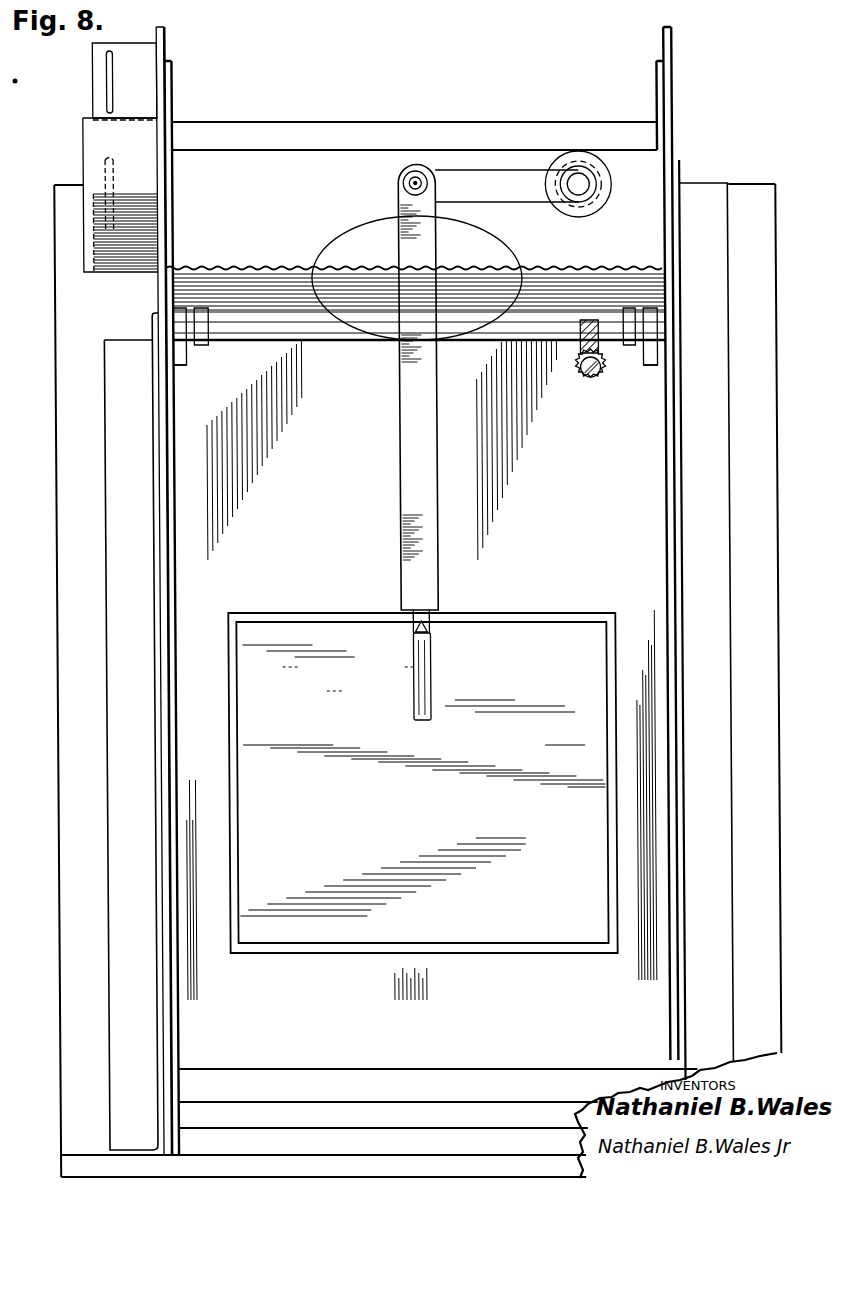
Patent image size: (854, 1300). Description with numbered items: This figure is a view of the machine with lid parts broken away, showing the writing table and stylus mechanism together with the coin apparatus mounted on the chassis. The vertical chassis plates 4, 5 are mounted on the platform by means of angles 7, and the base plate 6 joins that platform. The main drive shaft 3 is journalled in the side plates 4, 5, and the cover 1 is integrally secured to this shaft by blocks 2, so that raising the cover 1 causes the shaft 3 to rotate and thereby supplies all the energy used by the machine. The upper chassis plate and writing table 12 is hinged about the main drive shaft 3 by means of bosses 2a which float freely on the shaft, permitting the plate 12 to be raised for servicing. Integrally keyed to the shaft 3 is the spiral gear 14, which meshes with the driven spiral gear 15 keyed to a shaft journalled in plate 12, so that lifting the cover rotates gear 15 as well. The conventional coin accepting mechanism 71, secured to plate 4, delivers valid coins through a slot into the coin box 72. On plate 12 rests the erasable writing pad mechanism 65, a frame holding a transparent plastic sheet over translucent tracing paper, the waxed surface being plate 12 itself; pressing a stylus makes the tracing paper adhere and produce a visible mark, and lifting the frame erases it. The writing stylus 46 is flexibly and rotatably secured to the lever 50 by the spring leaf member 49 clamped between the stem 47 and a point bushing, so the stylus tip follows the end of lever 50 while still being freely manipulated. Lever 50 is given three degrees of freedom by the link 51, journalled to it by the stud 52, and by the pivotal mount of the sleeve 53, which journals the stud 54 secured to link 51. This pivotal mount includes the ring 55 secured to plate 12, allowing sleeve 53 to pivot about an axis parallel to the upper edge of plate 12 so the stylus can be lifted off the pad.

The cover 1 is at (245, 268).
The blocks 2 is at (206, 315).
The bosses 2a is at (190, 366).
The main drive shaft 3 is at (245, 335).
The vertical chassis plate 4 is at (166, 237).
The vertical chassis plate 5 is at (683, 256).
The base plate 6 is at (58, 382).
The angles 7 is at (141, 341).
The upper chassis plate and writing table 12 is at (660, 556).
The spiral gear 14 is at (590, 320).
The driven spiral gear 15 is at (586, 386).
The writing stylus 46 is at (430, 677).
The stem 47 is at (426, 627).
The spring leaf member 49 is at (409, 627).
The lever 50 is at (437, 568).
The link 51 is at (507, 190).
The stud 52 is at (402, 185).
The sleeve 53 is at (600, 182).
The stud 54 is at (584, 190).
The ring 55 is at (566, 212).
The erasable writing pad mechanism 65 is at (304, 613).
The coin accepting mechanism 71 is at (97, 83).
The coin box 72 is at (88, 152).